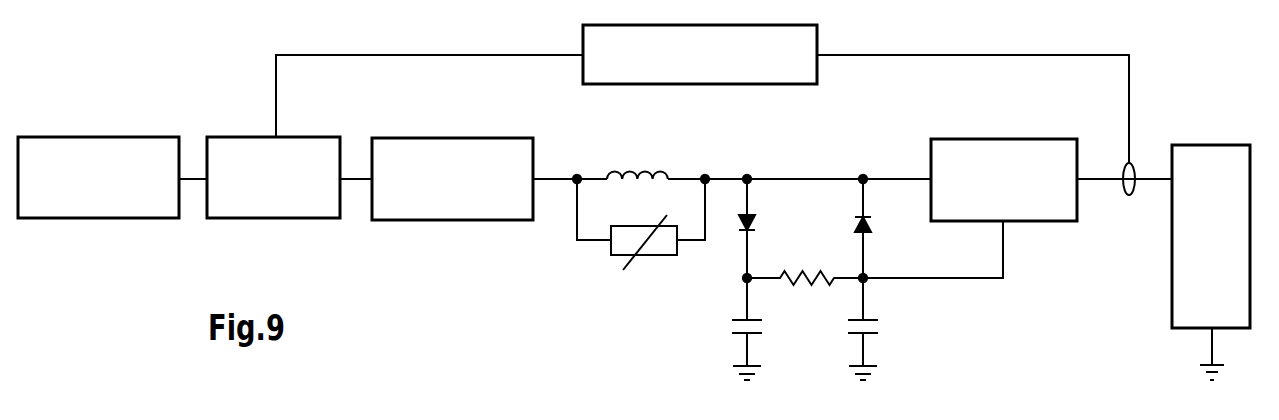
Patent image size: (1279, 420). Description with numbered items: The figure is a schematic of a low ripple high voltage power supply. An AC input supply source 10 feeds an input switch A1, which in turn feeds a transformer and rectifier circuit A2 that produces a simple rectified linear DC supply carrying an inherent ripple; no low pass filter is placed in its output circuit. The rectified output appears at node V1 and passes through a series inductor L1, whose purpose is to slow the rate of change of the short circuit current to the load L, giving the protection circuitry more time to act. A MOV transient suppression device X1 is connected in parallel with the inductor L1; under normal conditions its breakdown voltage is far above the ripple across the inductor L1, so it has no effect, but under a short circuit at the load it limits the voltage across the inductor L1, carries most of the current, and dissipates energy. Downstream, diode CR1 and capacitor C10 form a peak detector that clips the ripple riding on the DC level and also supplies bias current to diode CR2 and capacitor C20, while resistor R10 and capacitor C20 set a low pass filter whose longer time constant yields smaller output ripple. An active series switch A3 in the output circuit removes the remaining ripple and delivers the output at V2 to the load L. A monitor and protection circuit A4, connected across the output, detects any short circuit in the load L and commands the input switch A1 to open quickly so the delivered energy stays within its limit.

The AC input supply source 10 is at (147, 152).
The input switch A1 is at (323, 153).
The transformer and rectifier circuit A2 is at (495, 143).
The active series switch A3 is at (1053, 145).
The monitor and protection circuit A4 is at (807, 40).
The load L is at (1222, 162).
The voltage node V1 is at (562, 169).
The voltage node V2 is at (1128, 193).
The inductor L1 is at (637, 165).
The MOV transient suppression device X1 is at (643, 231).
The diode CR1 is at (767, 227).
The diode CR2 is at (882, 227).
The resistor R10 is at (805, 267).
The capacitor C10 is at (768, 329).
The capacitor C20 is at (884, 329).